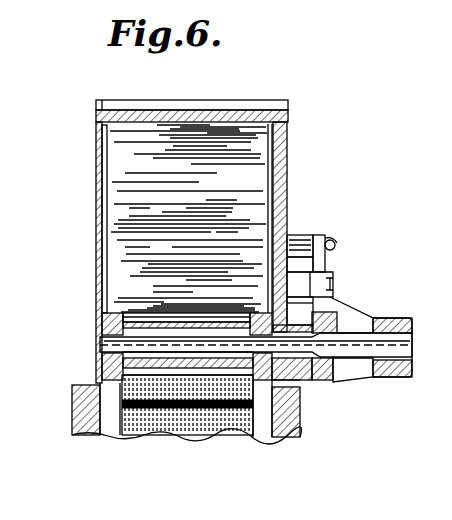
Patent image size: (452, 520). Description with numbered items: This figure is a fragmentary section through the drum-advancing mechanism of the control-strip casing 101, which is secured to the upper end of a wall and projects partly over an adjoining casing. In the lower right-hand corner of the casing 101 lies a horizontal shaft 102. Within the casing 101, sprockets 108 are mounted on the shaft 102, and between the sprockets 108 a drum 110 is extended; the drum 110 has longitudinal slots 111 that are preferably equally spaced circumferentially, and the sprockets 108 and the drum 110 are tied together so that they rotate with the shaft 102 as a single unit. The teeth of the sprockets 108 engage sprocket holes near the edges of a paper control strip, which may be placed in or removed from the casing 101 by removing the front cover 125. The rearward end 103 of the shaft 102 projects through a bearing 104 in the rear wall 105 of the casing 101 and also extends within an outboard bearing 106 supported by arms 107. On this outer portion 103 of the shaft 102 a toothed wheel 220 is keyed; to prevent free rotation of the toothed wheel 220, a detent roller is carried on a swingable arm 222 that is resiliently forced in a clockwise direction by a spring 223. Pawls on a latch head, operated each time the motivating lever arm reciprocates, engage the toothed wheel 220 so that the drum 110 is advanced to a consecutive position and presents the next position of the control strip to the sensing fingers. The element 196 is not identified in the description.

The casing 101 is at (288, 127).
The horizontal shaft 102 is at (100, 343).
The rearward end of the shaft 103 is at (289, 337).
The bearing 104 is at (308, 382).
The rear wall 105 is at (287, 178).
The outboard bearing 106 is at (400, 317).
The arms 107 is at (358, 380).
The sprockets 108 is at (265, 315).
The drum 110 is at (148, 320).
The longitudinal slots 111 is at (192, 320).
The front cover 125 is at (99, 137).
The side housing 196 is at (369, 271).
The toothed wheel 220 is at (313, 309).
The swingable arm 222 is at (324, 264).
The spring 223 is at (334, 241).